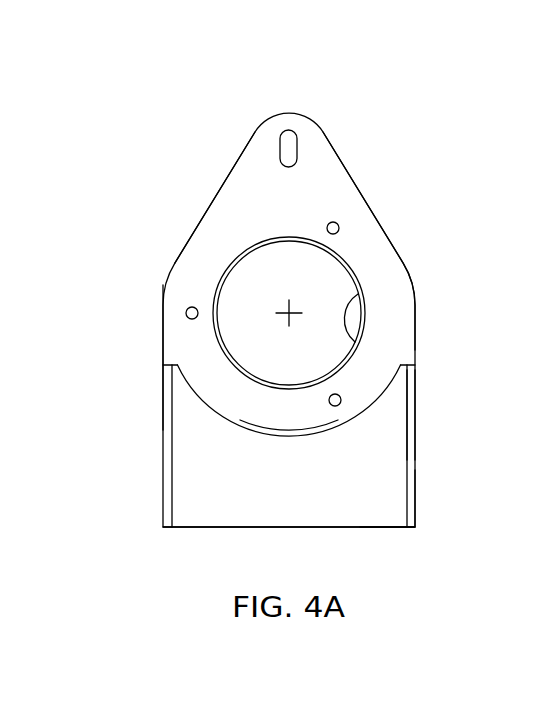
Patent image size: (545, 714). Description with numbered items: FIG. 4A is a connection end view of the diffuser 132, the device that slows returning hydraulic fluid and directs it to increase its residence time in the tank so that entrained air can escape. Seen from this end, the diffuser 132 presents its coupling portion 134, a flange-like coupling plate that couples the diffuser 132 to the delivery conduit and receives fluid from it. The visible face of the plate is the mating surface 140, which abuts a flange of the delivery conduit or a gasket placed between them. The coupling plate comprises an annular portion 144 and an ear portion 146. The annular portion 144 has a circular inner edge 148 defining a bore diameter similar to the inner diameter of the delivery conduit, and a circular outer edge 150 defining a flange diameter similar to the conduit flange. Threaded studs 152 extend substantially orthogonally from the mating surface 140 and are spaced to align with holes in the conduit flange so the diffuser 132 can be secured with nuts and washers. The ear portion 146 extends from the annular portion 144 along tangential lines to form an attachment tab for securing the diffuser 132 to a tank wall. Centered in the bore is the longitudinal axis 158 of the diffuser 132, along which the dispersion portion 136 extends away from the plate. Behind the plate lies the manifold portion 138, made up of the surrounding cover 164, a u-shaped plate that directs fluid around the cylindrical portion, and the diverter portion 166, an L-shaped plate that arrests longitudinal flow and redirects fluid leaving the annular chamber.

The diffuser 132 is at (375, 115).
The coupling portion 134 is at (423, 364).
The dispersion portion 136 is at (288, 236).
The manifold portion 138 is at (390, 528).
The mating surface 140 is at (226, 388).
The annular portion 144 is at (153, 279).
The ear portion 146 is at (258, 109).
The circular inner edge 148 is at (355, 337).
The circular outer edge 150 is at (287, 436).
The threaded studs 152 is at (340, 405).
The longitudinal axis 158 is at (283, 307).
The surrounding cover 164 is at (415, 414).
The diverter portion 166 is at (287, 528).